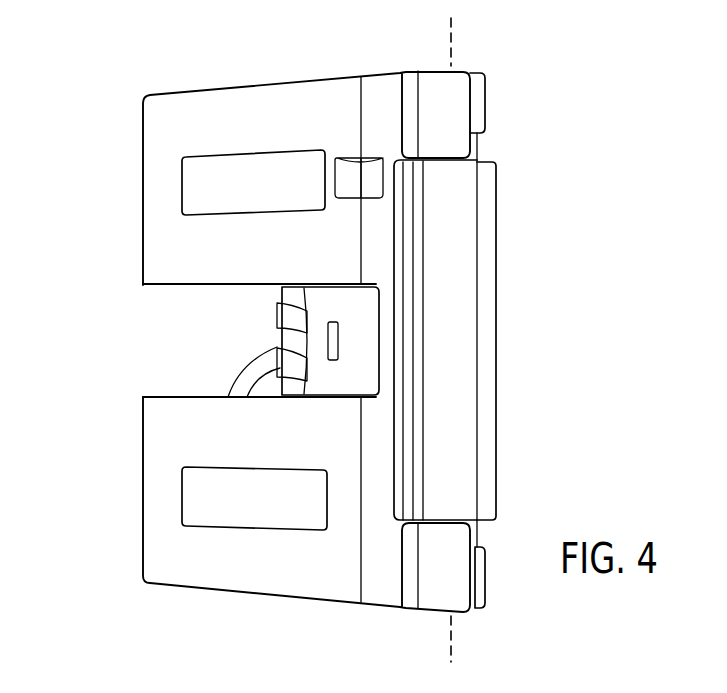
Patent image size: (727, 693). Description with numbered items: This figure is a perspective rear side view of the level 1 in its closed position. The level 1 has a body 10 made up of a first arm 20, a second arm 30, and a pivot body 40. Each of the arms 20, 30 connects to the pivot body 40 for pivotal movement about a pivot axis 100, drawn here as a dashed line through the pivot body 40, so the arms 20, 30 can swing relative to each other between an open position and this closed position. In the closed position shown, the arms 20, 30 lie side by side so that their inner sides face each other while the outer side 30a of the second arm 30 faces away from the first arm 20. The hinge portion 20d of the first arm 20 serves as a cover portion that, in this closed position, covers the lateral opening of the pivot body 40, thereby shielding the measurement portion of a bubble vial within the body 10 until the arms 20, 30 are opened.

The level 1 is at (299, 340).
The body 10 is at (352, 340).
The first arm 20 is at (278, 337).
The hinge portion 20d is at (484, 442).
The second arm 30 is at (314, 324).
The outer side 30a is at (223, 127).
The pivot body 40 is at (460, 222).
The pivot axis 100 is at (452, 48).